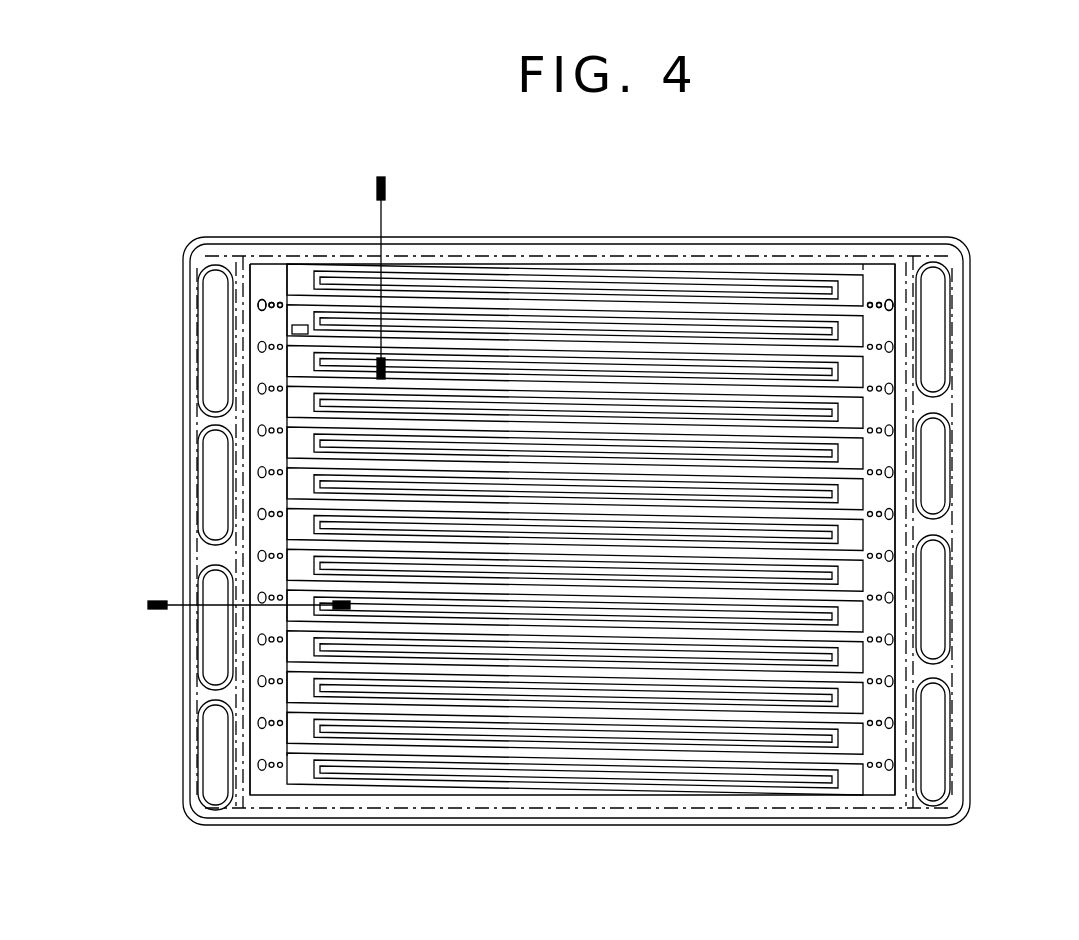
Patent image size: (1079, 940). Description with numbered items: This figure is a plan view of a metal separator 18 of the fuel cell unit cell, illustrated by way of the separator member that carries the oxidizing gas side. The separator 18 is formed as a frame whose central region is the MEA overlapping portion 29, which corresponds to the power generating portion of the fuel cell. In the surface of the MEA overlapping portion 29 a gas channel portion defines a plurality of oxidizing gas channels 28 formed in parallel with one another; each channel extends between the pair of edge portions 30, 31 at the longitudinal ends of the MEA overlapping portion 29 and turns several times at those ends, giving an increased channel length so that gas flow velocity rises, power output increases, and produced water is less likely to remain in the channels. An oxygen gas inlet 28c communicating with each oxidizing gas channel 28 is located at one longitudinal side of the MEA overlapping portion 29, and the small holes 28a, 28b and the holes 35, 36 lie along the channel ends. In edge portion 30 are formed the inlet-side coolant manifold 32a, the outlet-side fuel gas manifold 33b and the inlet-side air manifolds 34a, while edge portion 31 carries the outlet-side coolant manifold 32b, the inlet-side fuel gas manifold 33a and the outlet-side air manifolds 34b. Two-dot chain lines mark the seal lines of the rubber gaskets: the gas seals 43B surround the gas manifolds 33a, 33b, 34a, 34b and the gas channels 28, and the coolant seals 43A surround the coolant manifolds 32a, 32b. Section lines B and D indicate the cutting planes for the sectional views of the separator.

The separator 18 is at (652, 240).
The oxidizing gas channels 28 is at (455, 793).
The flow channel inlet portion 28a is at (370, 790).
The connection holes 28b is at (313, 772).
The oxygen gas inlet 28c is at (272, 770).
The MEA overlapping portion 29 is at (576, 792).
The edge portion 30 is at (258, 800).
The edge portion 31 is at (882, 792).
The inlet-side coolant manifold 32a is at (213, 590).
The outlet-side coolant manifold 32b is at (937, 333).
The inlet-side fuel gas manifold 33a is at (937, 466).
The outlet-side fuel gas manifold 33b is at (218, 752).
The inlet-side air manifold 34a is at (213, 383).
The outlet-side air manifold 34b is at (935, 722).
The inlet holes 35 is at (272, 298).
The outlet holes 36 is at (882, 297).
The coolant seals 43A is at (952, 380).
The gas seals 43B is at (950, 497).
The section line B is at (160, 612).
The section line D is at (390, 188).